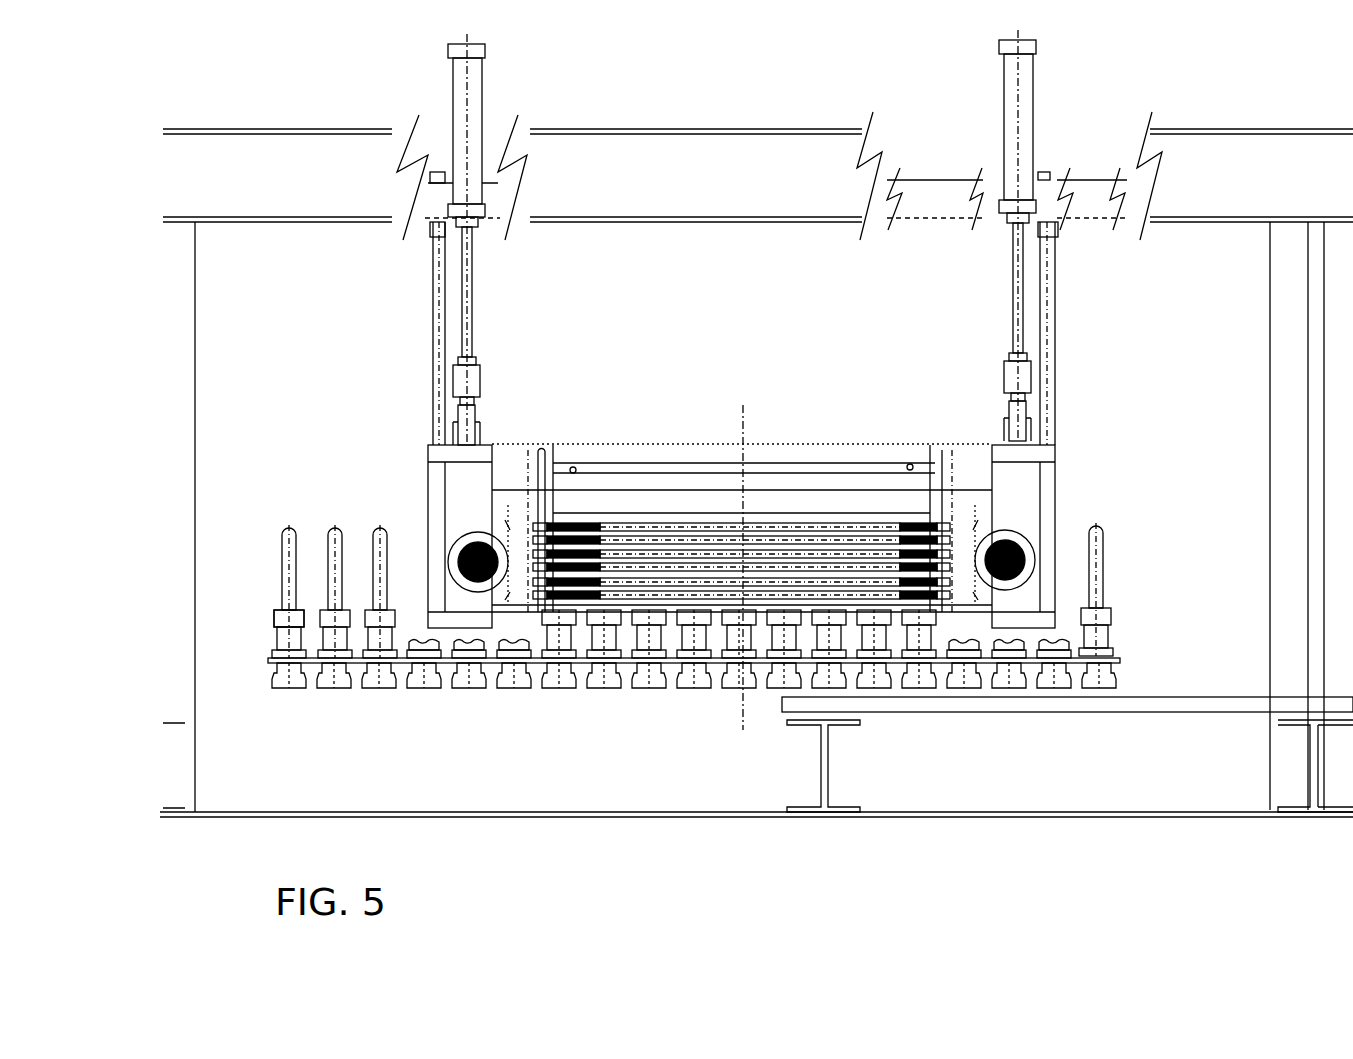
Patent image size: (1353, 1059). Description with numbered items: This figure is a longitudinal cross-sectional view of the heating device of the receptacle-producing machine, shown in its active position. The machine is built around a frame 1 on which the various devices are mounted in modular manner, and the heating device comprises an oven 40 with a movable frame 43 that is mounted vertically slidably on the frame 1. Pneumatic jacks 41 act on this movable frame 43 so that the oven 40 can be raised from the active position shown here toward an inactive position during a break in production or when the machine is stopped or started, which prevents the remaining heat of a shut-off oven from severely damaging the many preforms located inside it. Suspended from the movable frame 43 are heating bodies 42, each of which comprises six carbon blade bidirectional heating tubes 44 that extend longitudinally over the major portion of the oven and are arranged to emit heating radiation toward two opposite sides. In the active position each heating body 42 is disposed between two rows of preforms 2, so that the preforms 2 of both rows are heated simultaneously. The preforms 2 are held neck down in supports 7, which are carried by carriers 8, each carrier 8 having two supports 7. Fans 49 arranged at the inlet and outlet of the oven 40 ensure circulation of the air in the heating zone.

The frame 1 is at (756, 464).
The preforms 2 is at (289, 553).
The supports 7 is at (277, 620).
The carriers 8 is at (268, 662).
The oven 40 is at (566, 430).
The pneumatic jacks 41 is at (1027, 82).
The heating bodies 42 is at (848, 516).
The movable frame 43 is at (680, 453).
The carbon blade bidirectional heating tubes 44 is at (723, 538).
The fans 49 is at (456, 546).